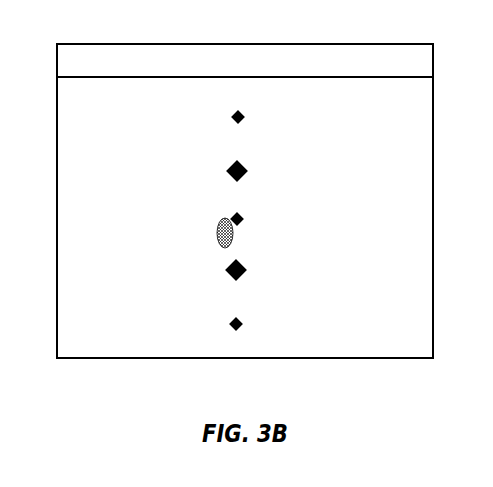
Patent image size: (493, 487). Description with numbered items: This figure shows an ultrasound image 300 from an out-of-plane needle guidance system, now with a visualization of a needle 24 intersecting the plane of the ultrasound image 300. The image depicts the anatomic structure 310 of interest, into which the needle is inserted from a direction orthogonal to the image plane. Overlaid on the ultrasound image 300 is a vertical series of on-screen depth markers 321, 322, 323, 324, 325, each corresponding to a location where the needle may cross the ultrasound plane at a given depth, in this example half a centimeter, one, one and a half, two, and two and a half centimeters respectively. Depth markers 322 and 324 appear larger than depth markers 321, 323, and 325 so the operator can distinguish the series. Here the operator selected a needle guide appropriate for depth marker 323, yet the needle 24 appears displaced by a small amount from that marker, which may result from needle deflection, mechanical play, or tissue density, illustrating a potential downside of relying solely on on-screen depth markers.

The ultrasound image 300 is at (370, 58).
The anatomic structure 310 is at (388, 97).
The needle 24 is at (218, 232).
The depth marker 321 is at (244, 117).
The depth marker 322 is at (247, 171).
The depth marker 323 is at (243, 219).
The depth marker 324 is at (246, 270).
The depth marker 325 is at (242, 324).